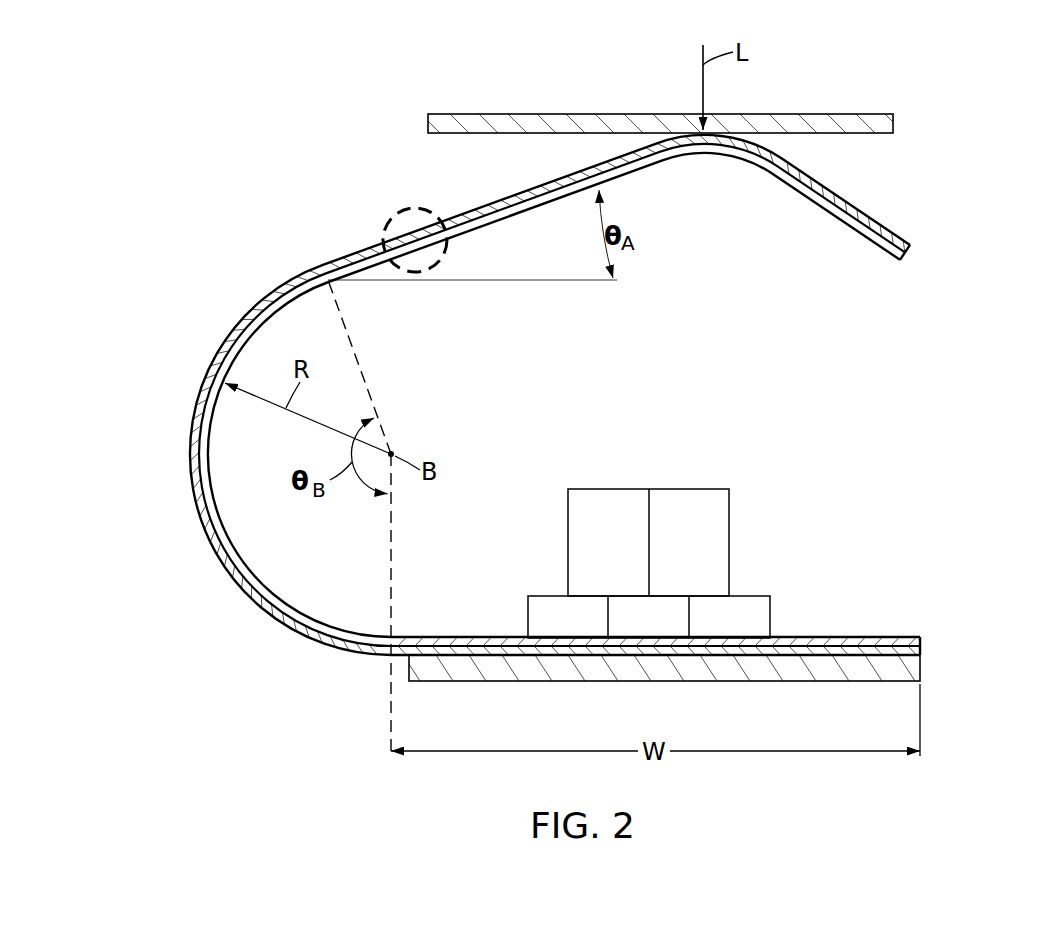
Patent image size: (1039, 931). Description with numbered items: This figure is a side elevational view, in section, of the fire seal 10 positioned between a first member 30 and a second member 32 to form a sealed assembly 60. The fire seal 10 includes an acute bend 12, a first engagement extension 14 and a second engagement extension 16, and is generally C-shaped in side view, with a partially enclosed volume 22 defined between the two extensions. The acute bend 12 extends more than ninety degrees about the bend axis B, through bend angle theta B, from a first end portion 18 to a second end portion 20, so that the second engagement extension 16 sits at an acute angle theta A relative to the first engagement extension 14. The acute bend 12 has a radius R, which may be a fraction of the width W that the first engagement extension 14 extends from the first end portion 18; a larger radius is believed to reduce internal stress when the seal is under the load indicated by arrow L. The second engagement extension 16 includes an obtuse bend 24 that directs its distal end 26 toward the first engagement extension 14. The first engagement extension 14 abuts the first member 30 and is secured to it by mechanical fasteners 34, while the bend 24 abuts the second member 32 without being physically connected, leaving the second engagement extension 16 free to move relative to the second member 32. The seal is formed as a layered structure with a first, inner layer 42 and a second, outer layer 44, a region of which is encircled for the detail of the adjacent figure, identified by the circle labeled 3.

The fire seal 10 is at (940, 77).
The acute bend 12 is at (189, 446).
The first engagement extension 14 is at (848, 637).
The second engagement extension 16 is at (549, 206).
The first end portion 18 is at (378, 664).
The second end portion 20 is at (288, 248).
The partially enclosed volume 22 is at (676, 385).
The bend 24 is at (724, 157).
The distal end 26 is at (893, 233).
The first member 30 is at (808, 682).
The second member 32 is at (832, 113).
The mechanical fasteners 34 is at (730, 510).
The first, inner layer 42 is at (502, 221).
The second, outer layer 44 is at (505, 198).
The sealed assembly 60 is at (285, 108).
The detail circle for FIG. 3 is at (390, 214).